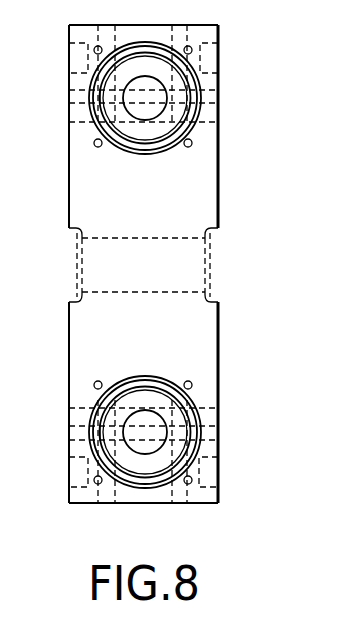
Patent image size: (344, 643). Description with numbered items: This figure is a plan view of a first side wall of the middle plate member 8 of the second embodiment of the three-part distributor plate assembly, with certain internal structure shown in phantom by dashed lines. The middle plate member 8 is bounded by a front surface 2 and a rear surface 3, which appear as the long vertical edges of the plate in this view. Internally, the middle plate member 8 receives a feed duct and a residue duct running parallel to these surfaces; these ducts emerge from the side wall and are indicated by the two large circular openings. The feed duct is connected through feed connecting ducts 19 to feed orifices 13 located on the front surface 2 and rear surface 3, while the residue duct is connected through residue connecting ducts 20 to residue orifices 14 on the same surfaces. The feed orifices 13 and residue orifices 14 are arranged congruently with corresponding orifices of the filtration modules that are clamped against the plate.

The middle plate member 8 is at (157, 264).
The front surface 2 is at (218, 333).
The rear surface 3 is at (70, 352).
The residue connecting ducts 20 is at (187, 73).
The residue orifices 14 is at (218, 105).
The feed orifices 13 is at (70, 422).
The feed connecting ducts 19 is at (203, 460).